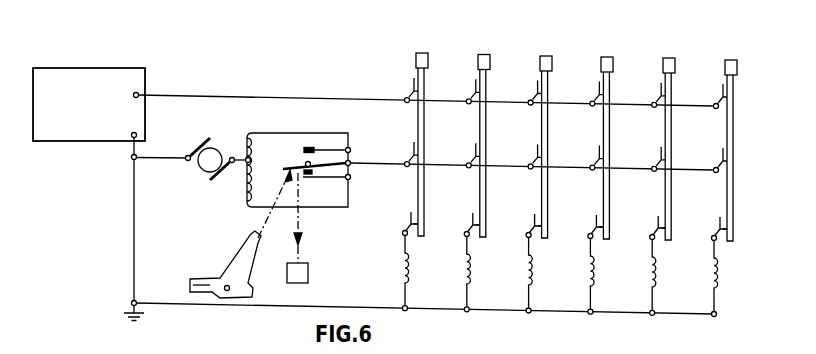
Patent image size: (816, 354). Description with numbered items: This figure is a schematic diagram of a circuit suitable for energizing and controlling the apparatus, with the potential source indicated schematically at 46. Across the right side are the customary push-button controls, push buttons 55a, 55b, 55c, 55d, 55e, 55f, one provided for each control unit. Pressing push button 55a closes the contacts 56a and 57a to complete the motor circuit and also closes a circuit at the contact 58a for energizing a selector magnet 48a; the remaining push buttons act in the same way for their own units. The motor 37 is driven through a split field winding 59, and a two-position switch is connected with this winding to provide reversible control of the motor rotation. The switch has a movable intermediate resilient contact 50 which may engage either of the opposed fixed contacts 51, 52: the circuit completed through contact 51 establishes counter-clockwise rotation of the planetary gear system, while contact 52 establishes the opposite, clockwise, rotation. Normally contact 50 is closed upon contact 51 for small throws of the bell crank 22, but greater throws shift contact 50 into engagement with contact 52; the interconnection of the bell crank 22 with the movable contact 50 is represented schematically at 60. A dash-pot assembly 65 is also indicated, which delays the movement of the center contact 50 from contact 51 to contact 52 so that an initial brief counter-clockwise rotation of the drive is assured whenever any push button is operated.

The potential source 46 is at (100, 68).
The motor 37 is at (189, 167).
The split field winding 59 is at (255, 142).
The fixed contact 52 is at (315, 148).
The movable intermediate resilient contact 50 is at (291, 165).
The fixed contact 51 is at (327, 185).
The interconnection 60 is at (271, 218).
The bell crank 22 is at (232, 271).
The dash-pot assembly 65 is at (306, 278).
The contact 56a is at (403, 98).
The contact 57a is at (403, 162).
The contact 58a is at (403, 232).
The selector magnet 48a is at (401, 272).
The push button 55a is at (429, 60).
The push button 55b is at (491, 60).
The push button 55c is at (553, 60).
The push button 55d is at (614, 60).
The push button 55e is at (676, 60).
The push button 55f is at (720, 60).